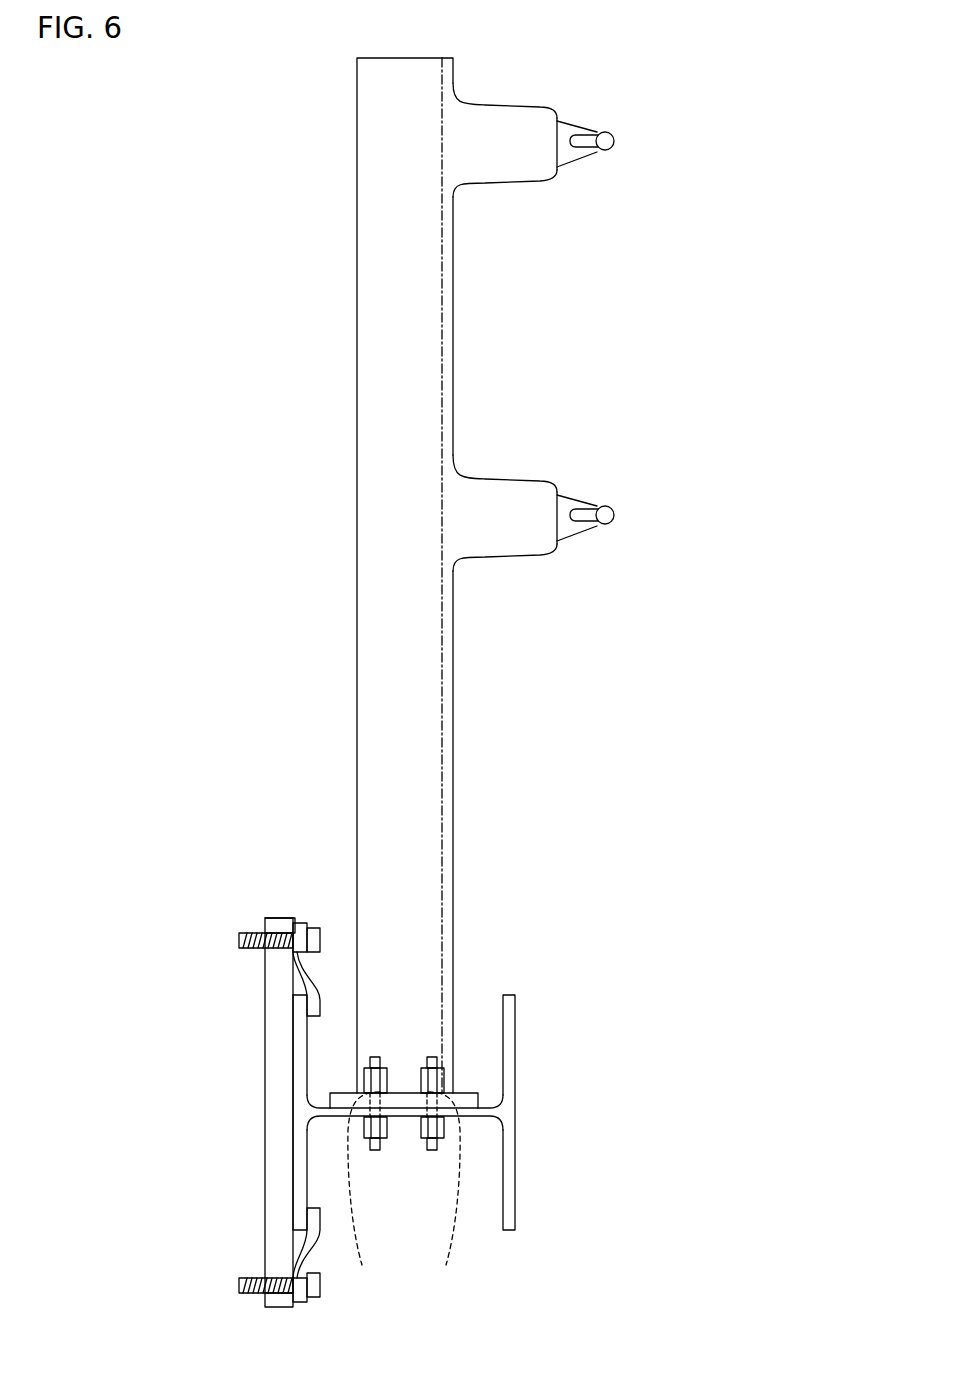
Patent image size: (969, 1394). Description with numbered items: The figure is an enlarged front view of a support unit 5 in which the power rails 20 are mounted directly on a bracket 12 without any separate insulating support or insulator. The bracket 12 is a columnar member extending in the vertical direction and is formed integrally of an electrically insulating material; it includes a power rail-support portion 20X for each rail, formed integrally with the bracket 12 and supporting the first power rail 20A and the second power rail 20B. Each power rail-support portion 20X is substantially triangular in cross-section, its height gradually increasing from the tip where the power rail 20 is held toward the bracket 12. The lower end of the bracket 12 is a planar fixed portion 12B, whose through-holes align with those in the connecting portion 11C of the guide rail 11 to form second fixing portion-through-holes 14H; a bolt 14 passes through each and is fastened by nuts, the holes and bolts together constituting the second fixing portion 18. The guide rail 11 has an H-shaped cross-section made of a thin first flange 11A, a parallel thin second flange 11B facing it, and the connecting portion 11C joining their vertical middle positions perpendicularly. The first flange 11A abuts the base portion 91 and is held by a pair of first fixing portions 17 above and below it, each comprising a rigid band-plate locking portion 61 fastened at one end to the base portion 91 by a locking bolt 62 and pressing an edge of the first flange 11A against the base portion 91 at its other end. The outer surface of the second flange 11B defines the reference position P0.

The support unit 5 is at (180, 174).
The bracket 12 is at (370, 97).
The fixed portion 12B is at (470, 1100).
The power rails 20 is at (594, 364).
The first power rail 20A is at (606, 150).
The second power rail 20B is at (606, 524).
The power rail-support portion 20X is at (494, 184).
The guide rail 11 is at (510, 1226).
The first flange 11A is at (297, 1040).
The second flange 11B is at (510, 1022).
The connecting portion 11C is at (475, 1112).
The reference position P0 is at (516, 1178).
The bolt 14 is at (420, 1136).
The second fixing portion-through-hole 14H is at (410, 1195).
The second fixing portion 18 is at (443, 1213).
The first fixing portion 17 is at (350, 842).
The locking portion 61 is at (292, 918).
The locking bolt 62 is at (318, 940).
The base portion 91 is at (275, 925).